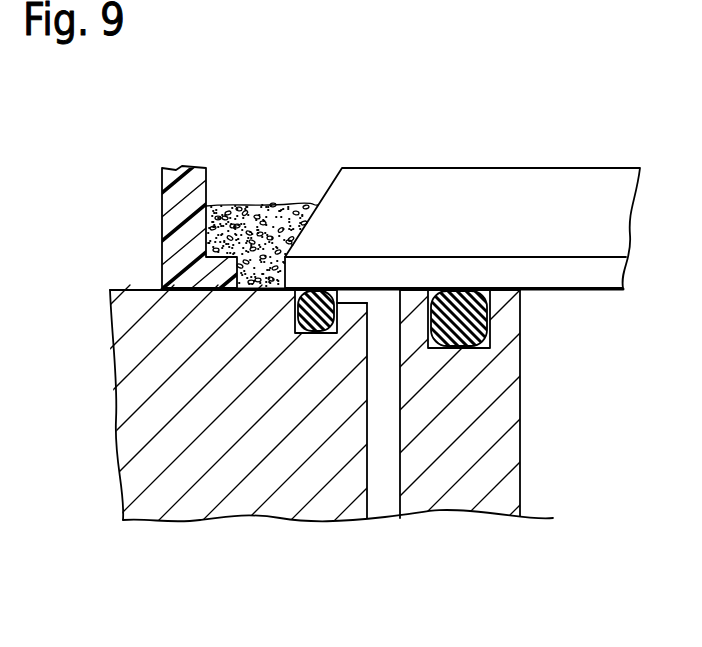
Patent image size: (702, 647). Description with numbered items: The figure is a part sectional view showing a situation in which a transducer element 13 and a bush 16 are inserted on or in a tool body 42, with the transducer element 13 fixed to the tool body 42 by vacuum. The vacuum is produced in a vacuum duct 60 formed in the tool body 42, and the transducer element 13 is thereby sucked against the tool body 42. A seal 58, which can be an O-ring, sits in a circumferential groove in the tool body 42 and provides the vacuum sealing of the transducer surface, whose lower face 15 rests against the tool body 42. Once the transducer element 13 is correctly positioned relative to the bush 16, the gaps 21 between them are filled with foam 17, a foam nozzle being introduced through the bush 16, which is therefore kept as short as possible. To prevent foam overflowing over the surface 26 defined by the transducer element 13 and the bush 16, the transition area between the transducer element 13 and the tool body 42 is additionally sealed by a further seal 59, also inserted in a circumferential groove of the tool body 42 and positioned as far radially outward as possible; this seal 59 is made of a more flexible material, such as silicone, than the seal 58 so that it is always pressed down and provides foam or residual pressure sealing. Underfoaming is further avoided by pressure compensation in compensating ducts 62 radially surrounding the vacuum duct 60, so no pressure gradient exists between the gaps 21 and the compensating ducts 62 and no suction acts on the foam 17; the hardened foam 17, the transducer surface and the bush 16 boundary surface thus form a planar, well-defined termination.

The transducer element 13 is at (547, 222).
The lower face of plate 15 is at (378, 287).
The bush 16 is at (163, 190).
The foam 17 is at (247, 225).
The gaps 21 is at (277, 195).
The surface 26 is at (272, 291).
The tool body 42 is at (253, 492).
The seal 58 is at (468, 325).
The further seal 59 is at (305, 334).
The vacuum duct 60 is at (586, 417).
The compensating ducts 62 is at (388, 500).